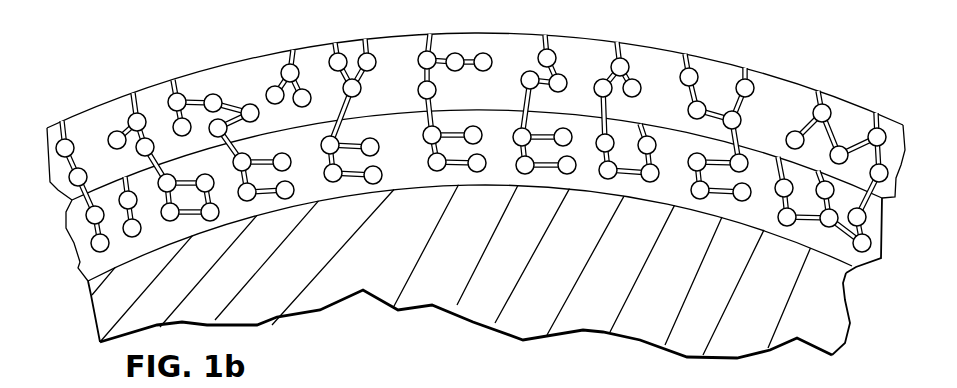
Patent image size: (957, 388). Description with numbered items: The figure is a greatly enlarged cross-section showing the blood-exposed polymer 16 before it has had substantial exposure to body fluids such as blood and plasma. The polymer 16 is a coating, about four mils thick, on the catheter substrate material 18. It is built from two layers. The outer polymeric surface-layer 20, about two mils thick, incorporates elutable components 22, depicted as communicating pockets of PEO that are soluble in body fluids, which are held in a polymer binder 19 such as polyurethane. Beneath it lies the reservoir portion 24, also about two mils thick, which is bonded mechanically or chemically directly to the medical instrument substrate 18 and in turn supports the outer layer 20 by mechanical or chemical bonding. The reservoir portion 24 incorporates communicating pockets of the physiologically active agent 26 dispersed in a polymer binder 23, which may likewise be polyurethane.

The polymer 16 is at (468, 189).
The catheter substrate material 18 is at (463, 234).
The polymer binder 19 is at (407, 96).
The polymeric surface-layer 20 is at (55, 195).
The elutable components 22 is at (282, 71).
The polymer binder 23 is at (412, 153).
The reservoir portion 24 is at (68, 248).
The physiologically active agent 26 is at (240, 200).